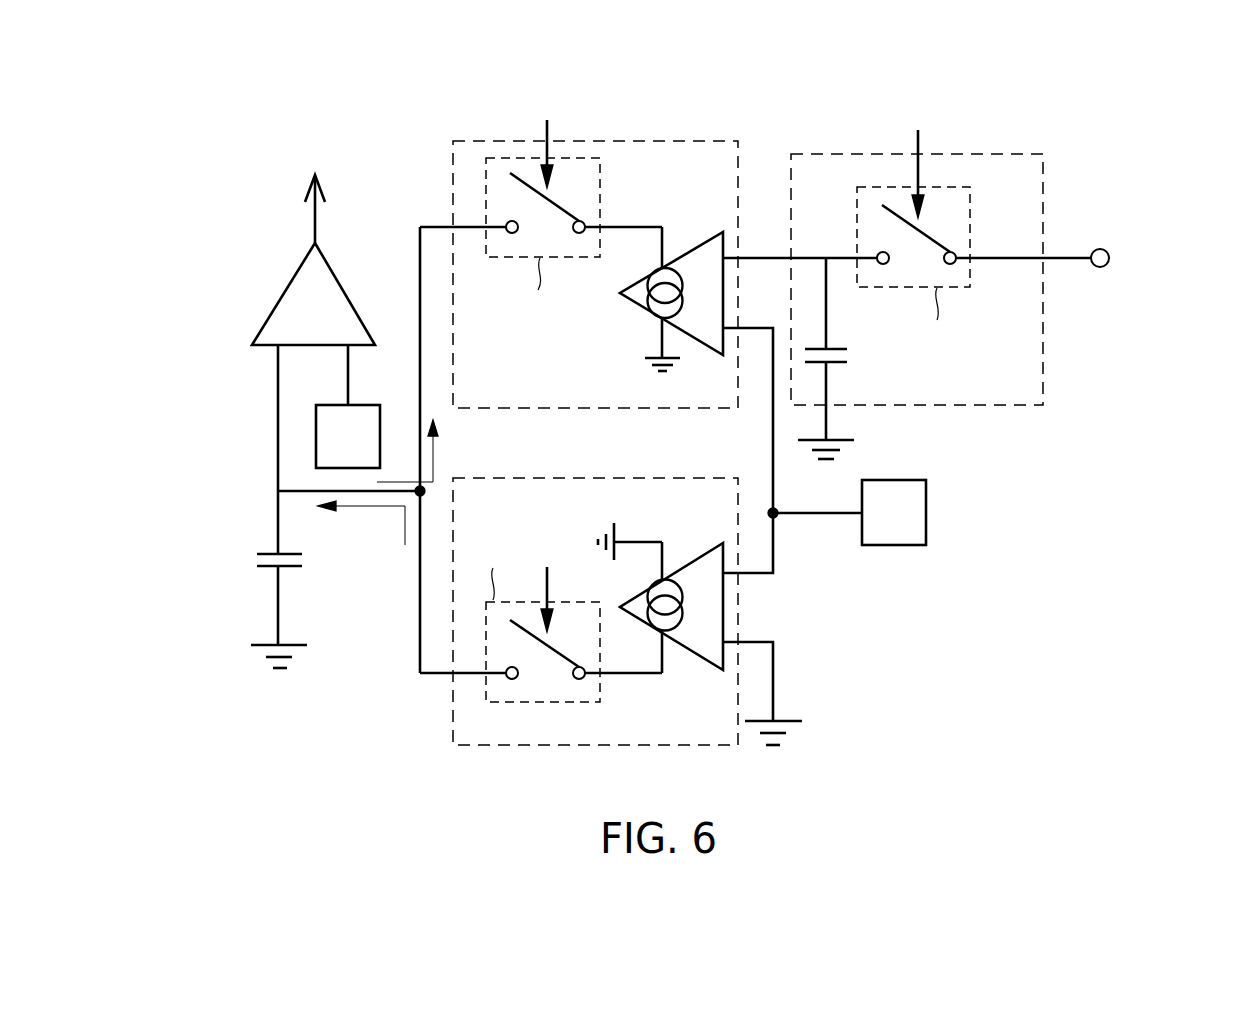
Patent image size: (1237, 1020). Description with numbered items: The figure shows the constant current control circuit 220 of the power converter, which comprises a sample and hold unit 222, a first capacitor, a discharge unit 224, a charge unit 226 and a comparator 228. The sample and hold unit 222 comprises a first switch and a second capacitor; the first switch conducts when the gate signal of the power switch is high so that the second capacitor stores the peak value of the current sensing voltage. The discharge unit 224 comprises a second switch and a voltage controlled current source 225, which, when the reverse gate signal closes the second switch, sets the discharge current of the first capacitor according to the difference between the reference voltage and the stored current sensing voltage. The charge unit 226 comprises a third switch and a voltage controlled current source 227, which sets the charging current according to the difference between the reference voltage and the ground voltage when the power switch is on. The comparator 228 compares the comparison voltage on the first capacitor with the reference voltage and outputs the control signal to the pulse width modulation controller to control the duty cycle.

The constant current control circuit 220 is at (1115, 130).
The sample and hold unit 222 is at (993, 154).
The discharge unit 224 is at (657, 141).
The voltage controlled current source 225 is at (688, 247).
The charge unit 226 is at (657, 478).
The voltage controlled current source 227 is at (689, 652).
The comparator 228 is at (282, 292).